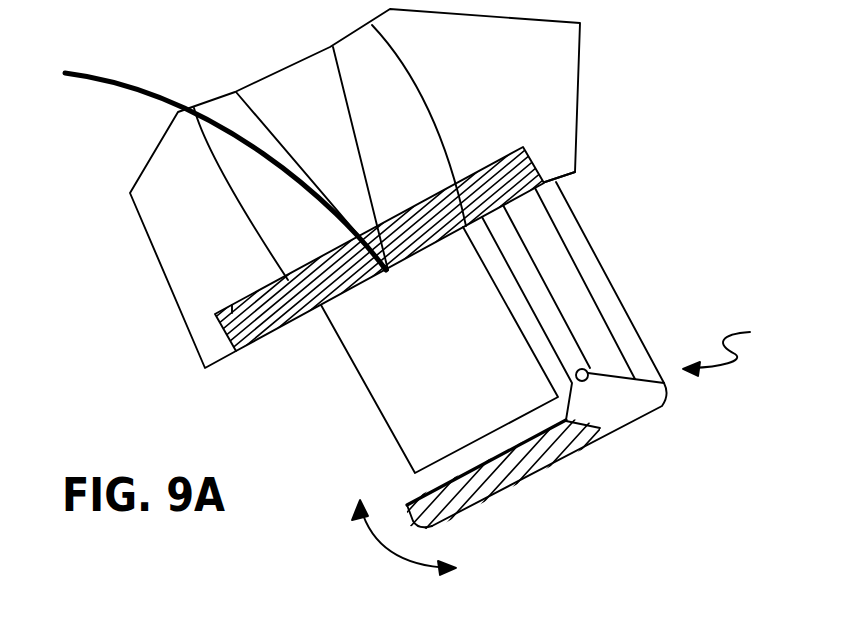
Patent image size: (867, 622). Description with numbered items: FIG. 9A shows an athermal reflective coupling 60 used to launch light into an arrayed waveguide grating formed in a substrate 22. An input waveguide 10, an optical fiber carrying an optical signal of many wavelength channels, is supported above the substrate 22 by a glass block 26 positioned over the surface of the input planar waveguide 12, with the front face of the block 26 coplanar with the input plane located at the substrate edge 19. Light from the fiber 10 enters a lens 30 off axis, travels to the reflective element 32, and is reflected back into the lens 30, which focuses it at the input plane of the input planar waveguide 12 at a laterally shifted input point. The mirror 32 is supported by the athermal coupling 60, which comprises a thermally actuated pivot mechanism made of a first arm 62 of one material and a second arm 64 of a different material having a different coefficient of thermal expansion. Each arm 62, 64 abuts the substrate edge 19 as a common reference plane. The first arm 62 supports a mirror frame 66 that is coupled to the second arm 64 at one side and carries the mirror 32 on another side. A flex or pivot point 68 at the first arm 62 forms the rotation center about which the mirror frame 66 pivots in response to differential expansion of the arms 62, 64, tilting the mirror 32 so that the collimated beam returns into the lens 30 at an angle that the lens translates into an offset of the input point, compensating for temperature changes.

The input waveguide 10 is at (125, 92).
The input planar waveguide 12 is at (410, 122).
The substrate edge 19 is at (563, 178).
The substrate 22 is at (355, 188).
The glass block 26 is at (232, 306).
The lens 30 is at (340, 338).
The reflective element 32 is at (420, 503).
The athermal reflective coupling 60 is at (737, 347).
The first arm 62 is at (525, 272).
The second arm 64 is at (605, 300).
The mirror frame 66 is at (590, 427).
The pivot point 68 is at (587, 380).